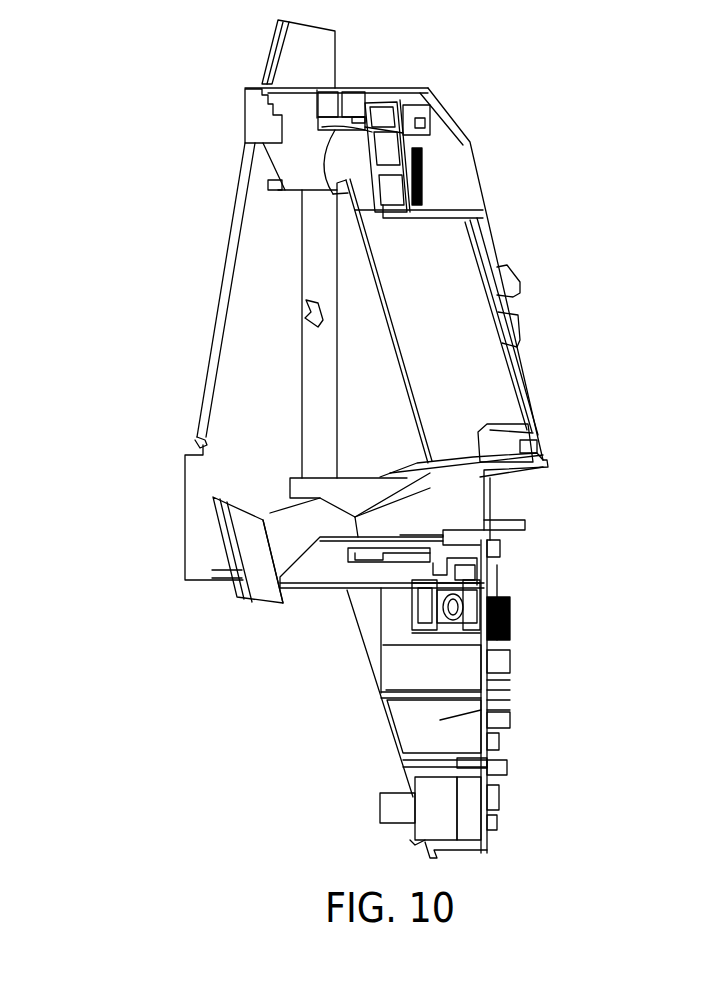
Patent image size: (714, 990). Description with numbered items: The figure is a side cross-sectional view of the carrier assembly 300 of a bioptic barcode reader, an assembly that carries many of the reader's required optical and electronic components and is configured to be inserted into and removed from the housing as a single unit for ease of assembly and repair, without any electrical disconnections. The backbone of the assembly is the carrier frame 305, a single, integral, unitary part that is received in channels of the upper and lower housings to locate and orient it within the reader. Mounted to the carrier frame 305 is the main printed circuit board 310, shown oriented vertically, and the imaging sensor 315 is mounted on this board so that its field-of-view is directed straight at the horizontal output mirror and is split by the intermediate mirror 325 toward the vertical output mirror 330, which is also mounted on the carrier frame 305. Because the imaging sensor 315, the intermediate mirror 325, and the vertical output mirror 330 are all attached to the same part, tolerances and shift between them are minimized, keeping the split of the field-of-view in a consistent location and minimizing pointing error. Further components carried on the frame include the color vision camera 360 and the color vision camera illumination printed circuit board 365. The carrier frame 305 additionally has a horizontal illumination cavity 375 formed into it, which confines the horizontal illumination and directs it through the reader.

The carrier assembly 300 is at (127, 66).
The carrier frame 305 is at (522, 357).
The main printed circuit board 310 is at (472, 583).
The imaging sensor 315 is at (412, 605).
The intermediate mirror 325 is at (262, 603).
The vertical output mirror 330 is at (458, 236).
The color vision camera 360 is at (342, 152).
The color vision camera illumination printed circuit board 365 is at (412, 148).
The horizontal illumination cavity 375 is at (398, 672).